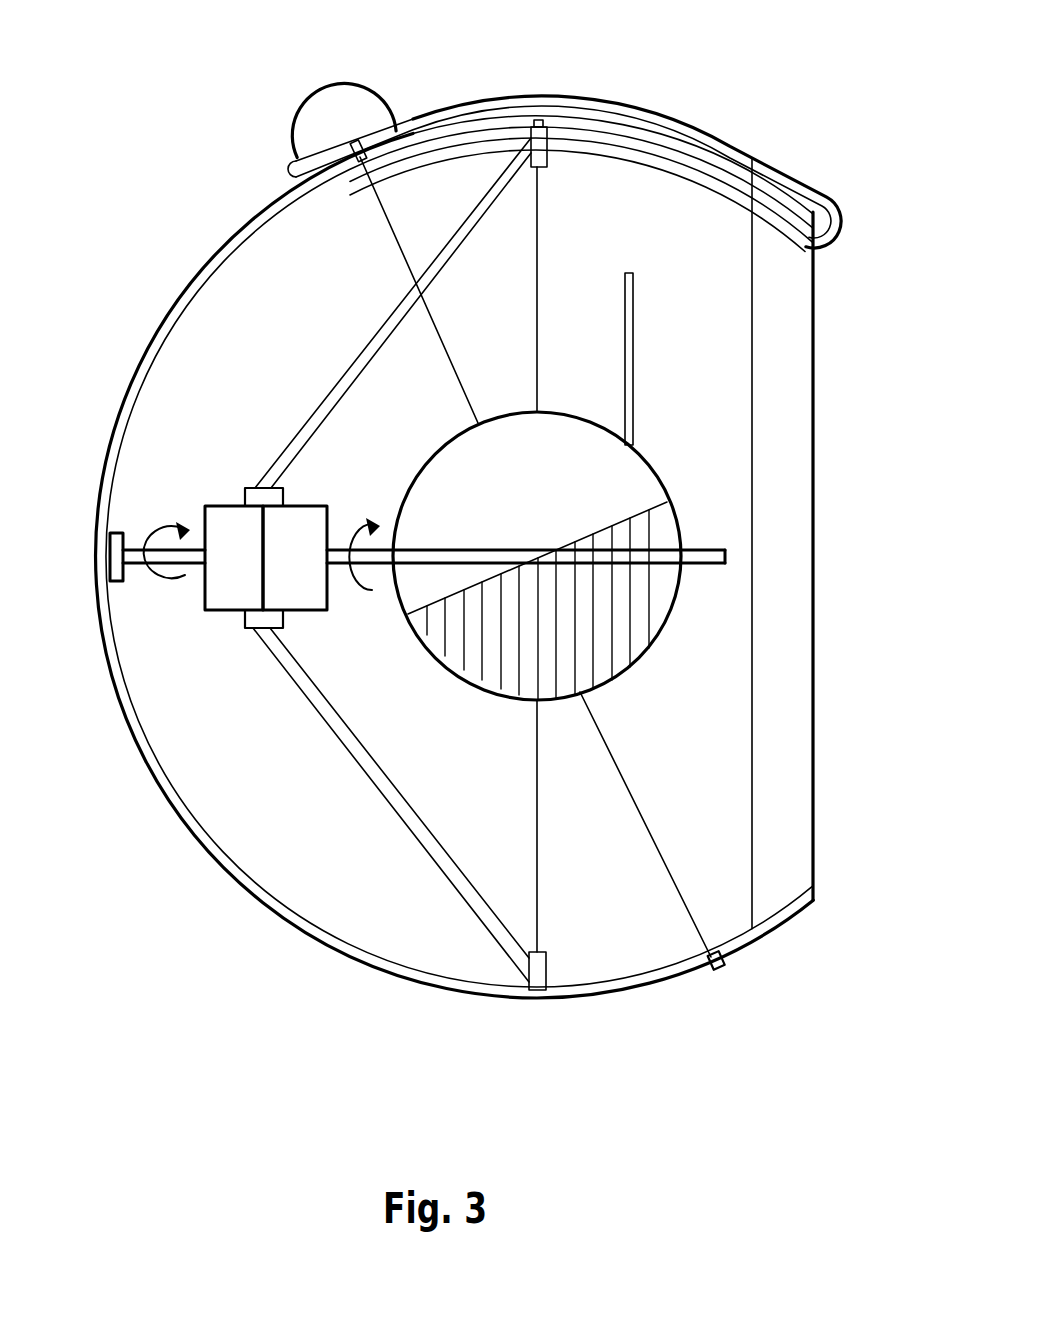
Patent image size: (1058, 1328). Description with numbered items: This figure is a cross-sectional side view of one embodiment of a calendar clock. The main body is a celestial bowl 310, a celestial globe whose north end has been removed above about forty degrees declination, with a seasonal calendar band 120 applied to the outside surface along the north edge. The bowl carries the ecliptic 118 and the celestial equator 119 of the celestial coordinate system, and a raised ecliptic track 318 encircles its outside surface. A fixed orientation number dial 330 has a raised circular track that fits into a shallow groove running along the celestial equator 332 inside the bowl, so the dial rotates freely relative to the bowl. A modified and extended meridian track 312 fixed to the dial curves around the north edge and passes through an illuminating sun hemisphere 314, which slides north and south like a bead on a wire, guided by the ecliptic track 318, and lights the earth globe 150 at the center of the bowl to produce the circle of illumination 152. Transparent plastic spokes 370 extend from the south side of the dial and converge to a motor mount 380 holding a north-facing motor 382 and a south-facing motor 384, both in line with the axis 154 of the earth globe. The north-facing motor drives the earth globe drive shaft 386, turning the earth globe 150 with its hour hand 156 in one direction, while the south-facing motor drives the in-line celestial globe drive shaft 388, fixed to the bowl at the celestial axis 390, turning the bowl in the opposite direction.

The celestial bowl 310 is at (190, 283).
The meridian track 312 is at (747, 152).
The illuminating sun hemisphere 314 is at (362, 113).
The calendar band 120 is at (795, 350).
The celestial equator 119 is at (538, 275).
The hour hand 156 is at (632, 363).
The earth globe 150 is at (645, 650).
The circle of illumination 152 is at (658, 490).
The axis 154 is at (708, 567).
The celestial axis 390 is at (113, 580).
The south-facing motor 384 is at (233, 587).
The north-facing motor 382 is at (308, 588).
The motor mount 380 is at (280, 494).
The spokes 370 is at (347, 383).
The fixed orientation number dial 330 is at (548, 975).
The celestial equator groove 332 is at (537, 993).
The celestial globe drive shaft 388 is at (190, 550).
The earth globe drive shaft 386 is at (383, 545).
The ecliptic 118 is at (652, 805).
The ecliptic track 318 is at (719, 970).